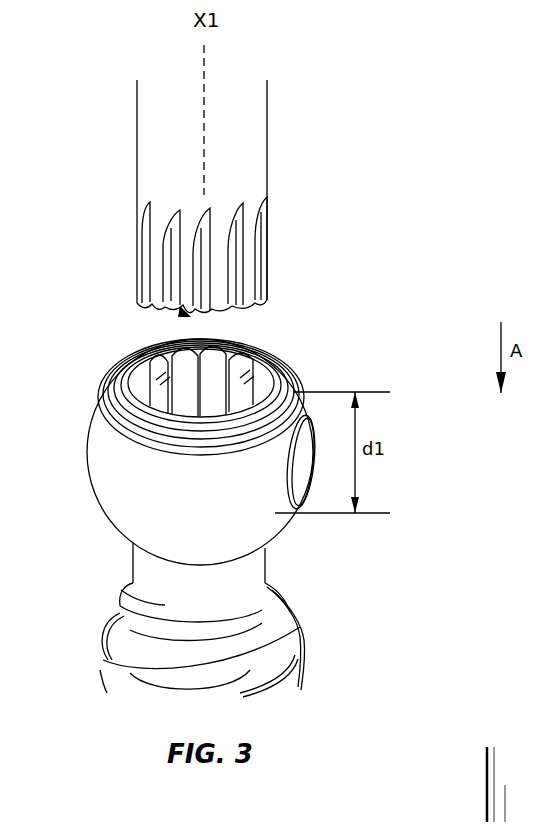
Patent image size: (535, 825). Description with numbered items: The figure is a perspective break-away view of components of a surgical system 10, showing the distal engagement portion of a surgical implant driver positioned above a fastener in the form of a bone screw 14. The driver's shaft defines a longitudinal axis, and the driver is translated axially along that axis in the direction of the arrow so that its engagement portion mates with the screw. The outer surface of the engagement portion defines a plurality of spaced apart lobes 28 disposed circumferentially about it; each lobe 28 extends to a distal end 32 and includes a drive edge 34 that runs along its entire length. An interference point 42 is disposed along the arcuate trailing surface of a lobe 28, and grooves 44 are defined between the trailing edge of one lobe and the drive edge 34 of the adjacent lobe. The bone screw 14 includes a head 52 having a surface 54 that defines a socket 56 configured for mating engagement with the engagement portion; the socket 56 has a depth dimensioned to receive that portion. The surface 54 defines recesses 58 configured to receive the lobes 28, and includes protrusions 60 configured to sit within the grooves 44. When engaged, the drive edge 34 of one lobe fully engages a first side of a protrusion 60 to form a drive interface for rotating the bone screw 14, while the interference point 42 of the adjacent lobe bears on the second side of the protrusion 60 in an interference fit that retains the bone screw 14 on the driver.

The surgical system 10 is at (403, 106).
The bone screw 14 is at (400, 478).
The lobe 28 is at (220, 296).
The distal end 32 is at (248, 262).
The drive edge 34 is at (177, 277).
The interference point 42 is at (250, 232).
The groove 44 is at (185, 312).
The head 52 is at (130, 500).
The surface 54 is at (267, 362).
The socket 56 is at (167, 373).
The recess 58 is at (262, 351).
The protrusion 60 is at (233, 346).